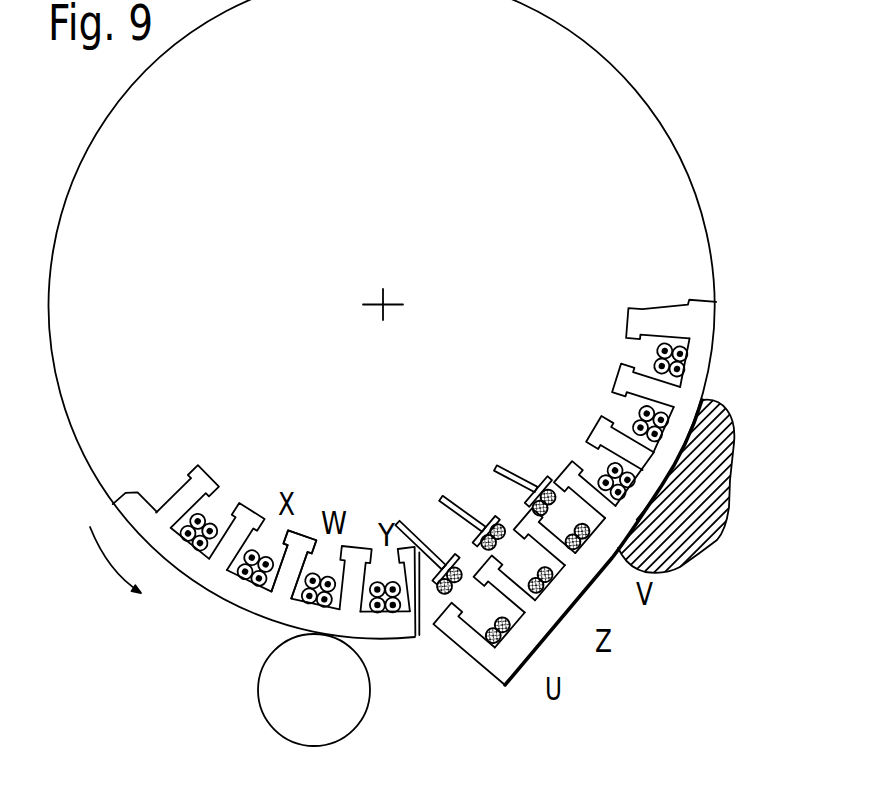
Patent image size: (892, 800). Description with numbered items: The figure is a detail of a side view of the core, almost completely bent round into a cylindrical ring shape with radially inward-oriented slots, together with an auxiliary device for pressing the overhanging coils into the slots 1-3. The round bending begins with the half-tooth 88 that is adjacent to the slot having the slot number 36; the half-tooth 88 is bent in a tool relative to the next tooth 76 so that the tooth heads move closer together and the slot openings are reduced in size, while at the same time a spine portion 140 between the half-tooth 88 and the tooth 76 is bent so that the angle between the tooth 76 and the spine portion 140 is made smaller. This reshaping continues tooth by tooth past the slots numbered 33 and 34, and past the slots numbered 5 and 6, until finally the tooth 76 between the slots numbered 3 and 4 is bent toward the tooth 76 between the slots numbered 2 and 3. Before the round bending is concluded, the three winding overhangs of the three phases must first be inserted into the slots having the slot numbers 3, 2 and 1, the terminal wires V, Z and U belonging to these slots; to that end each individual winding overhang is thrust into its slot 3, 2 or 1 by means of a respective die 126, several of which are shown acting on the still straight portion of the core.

The slot number 1 is at (525, 672).
The slot number 2 is at (576, 626).
The slot number 3 is at (626, 576).
The slot number 4 is at (675, 511).
The slot number 5 is at (702, 438).
The slot number 6 is at (714, 364).
The slot number 33 is at (382, 323).
The slot number 34 is at (261, 554).
The slot number 36 is at (332, 690).
The tooth 76 is at (292, 536).
The half-tooth 88 is at (420, 640).
The die 126 is at (497, 465).
The spine portion 140 is at (416, 640).